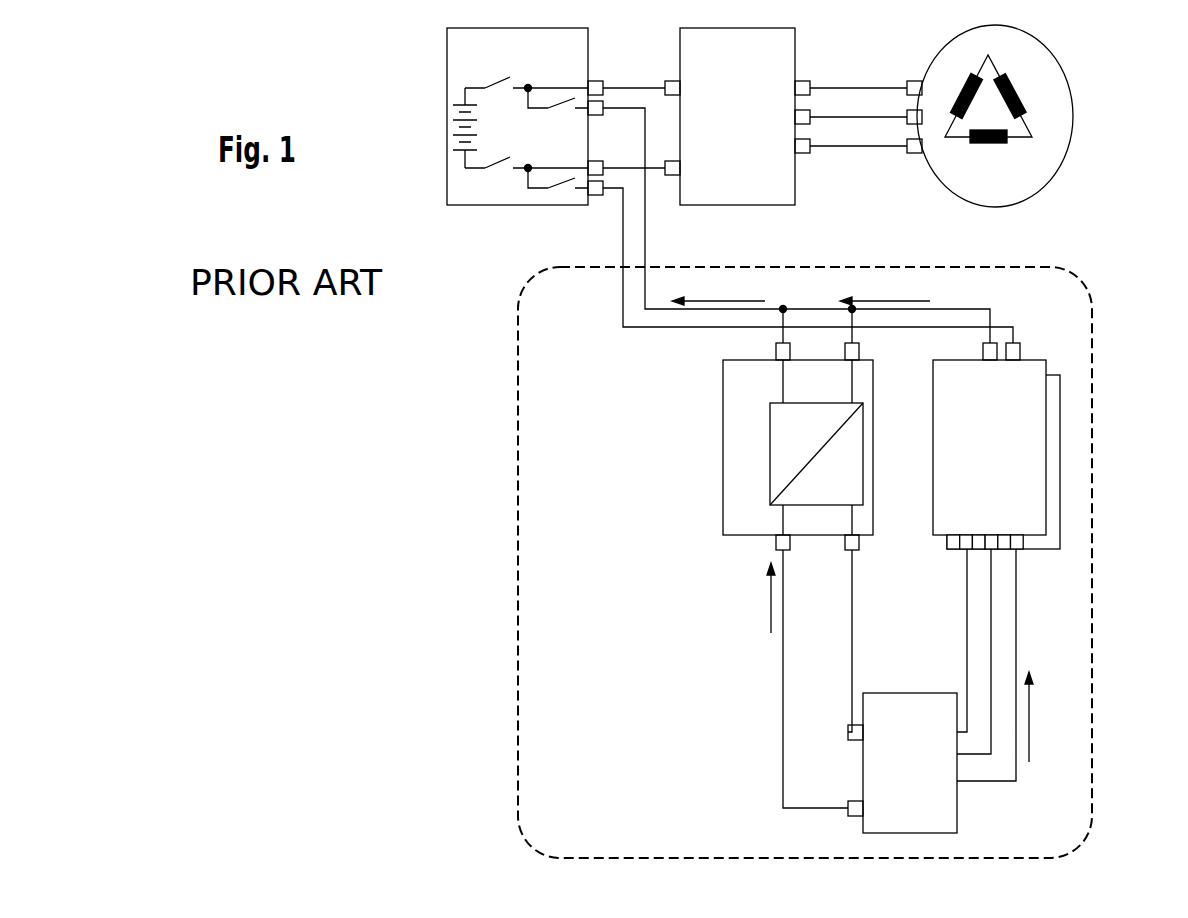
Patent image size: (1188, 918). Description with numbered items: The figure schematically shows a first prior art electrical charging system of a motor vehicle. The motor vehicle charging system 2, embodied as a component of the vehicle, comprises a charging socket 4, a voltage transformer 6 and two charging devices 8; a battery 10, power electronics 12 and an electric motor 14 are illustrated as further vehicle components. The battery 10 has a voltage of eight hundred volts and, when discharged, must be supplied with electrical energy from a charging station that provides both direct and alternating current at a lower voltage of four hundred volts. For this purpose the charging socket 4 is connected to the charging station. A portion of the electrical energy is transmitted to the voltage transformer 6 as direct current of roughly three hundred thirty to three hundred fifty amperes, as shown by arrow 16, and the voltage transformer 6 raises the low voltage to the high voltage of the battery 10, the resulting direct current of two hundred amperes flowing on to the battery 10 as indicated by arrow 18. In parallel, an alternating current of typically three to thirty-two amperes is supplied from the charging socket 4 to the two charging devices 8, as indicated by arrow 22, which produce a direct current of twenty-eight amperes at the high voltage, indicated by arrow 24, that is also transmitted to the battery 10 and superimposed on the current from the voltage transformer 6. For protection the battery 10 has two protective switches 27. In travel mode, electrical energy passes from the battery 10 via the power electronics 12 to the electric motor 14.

The motor vehicle charging system 2 is at (1050, 267).
The charging socket 4 is at (957, 815).
The voltage transformer 6 is at (723, 505).
The charging devices 8 is at (933, 478).
The battery 10 is at (467, 205).
The power electronics 12 is at (758, 205).
The electric motor 14 is at (1057, 172).
The arrow 16 is at (770, 600).
The arrow 18 is at (722, 300).
The arrow 22 is at (1030, 710).
The arrow 24 is at (887, 300).
The protective switches 27 is at (538, 72).